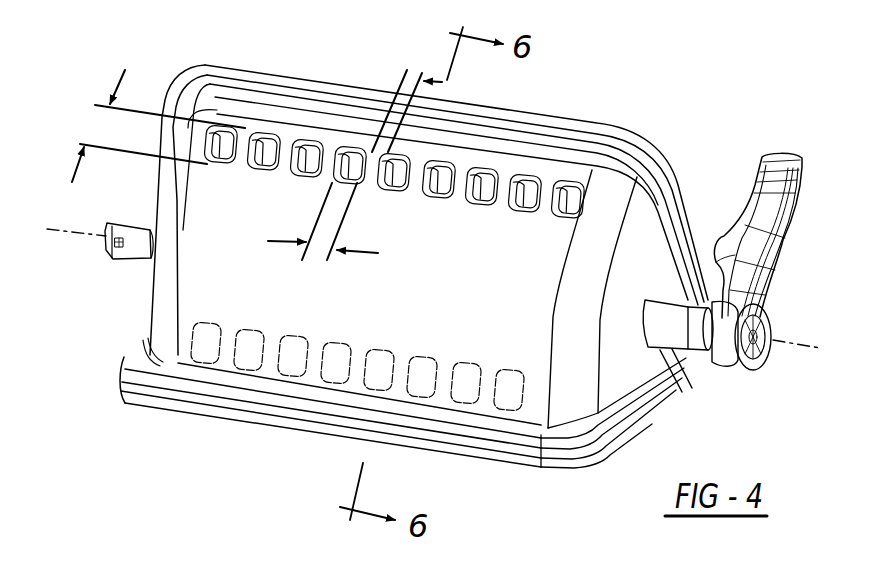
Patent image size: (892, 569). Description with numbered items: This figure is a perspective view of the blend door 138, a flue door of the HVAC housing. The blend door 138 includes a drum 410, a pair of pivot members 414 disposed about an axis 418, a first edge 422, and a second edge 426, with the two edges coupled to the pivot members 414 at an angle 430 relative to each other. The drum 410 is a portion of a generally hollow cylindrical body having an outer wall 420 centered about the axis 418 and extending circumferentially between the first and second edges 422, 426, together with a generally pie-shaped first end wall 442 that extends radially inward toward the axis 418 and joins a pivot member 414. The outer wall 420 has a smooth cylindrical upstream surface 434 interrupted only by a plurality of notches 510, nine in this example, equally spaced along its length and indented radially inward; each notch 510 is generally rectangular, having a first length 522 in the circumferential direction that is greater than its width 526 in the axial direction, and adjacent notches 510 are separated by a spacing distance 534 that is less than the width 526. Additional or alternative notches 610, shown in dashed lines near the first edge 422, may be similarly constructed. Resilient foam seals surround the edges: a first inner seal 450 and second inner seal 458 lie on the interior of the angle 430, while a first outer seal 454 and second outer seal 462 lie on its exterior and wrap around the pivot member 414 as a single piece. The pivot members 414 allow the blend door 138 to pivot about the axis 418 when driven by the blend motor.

The blend door 138 is at (92, 64).
The drum 410 is at (150, 274).
The pivot members 414 is at (128, 225).
The axis 418 is at (56, 232).
The outer wall 420 is at (217, 303).
The first edge 422 is at (512, 442).
The second edge 426 is at (568, 128).
The angle 430 is at (677, 248).
The upstream surface 434 is at (231, 265).
The first end wall 442 is at (610, 358).
The first inner seal 450 is at (645, 322).
The first outer seal 454 is at (567, 461).
The second inner seal 458 is at (621, 167).
The second outer seal 462 is at (662, 156).
The notches 510 is at (303, 178).
The first length 522 is at (125, 82).
The width 526 is at (280, 246).
The spacing distance 534 is at (401, 75).
The additional notches 610 is at (290, 376).